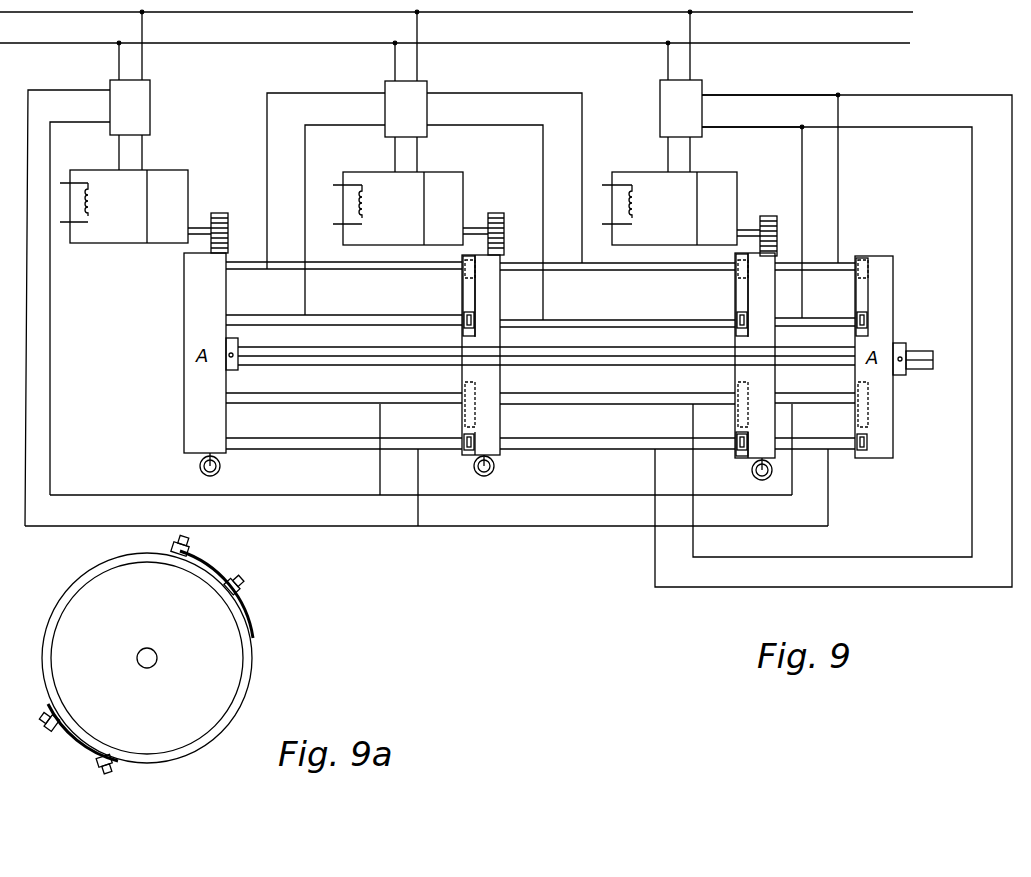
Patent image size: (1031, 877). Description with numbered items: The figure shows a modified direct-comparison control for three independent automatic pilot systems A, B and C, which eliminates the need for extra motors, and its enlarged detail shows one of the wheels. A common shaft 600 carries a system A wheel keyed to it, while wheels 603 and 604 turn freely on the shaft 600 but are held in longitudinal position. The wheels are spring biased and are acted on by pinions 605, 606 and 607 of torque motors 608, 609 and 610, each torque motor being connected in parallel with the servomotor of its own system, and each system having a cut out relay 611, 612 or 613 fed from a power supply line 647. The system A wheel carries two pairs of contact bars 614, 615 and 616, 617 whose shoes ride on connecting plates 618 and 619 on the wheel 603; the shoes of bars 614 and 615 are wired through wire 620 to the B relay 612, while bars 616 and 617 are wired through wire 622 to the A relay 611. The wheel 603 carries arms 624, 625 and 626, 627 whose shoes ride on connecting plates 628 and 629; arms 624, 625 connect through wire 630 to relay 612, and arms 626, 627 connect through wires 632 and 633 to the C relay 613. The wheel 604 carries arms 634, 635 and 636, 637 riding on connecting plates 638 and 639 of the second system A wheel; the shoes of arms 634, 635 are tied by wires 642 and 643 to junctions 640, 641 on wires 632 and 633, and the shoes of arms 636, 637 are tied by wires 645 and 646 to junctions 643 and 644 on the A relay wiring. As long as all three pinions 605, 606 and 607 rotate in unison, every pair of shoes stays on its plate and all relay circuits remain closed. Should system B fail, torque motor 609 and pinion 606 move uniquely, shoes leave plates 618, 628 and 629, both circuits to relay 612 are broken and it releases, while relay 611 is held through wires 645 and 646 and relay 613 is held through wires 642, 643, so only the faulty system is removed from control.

In FIG. 9, the shaft 600 is at (280, 368).
In FIG. 9A, the shaft 600 is at (157, 662).
In FIG. 9, the wheel 603 is at (503, 383).
In FIG. 9A, the wheel 603 is at (252, 676).
In FIG. 9, the wheel 604 is at (777, 376).
In FIG. 9, the pinion 605 is at (219, 213).
In FIG. 9, the pinion 606 is at (496, 213).
In FIG. 9, the pinion 607 is at (765, 216).
In FIG. 9, the torque motor 608 is at (124, 206).
In FIG. 9, the torque motor 609 is at (398, 208).
In FIG. 9, the torque motor 610 is at (669, 208).
In FIG. 9, the cut out relay 611 is at (150, 108).
In FIG. 9, the cut out relay 612 is at (427, 110).
In FIG. 9, the cut out relay 613 is at (660, 111).
In FIG. 9, the contact bar 614 is at (246, 278).
In FIG. 9A, the contact bar 614 is at (172, 545).
In FIG. 9, the contact bar 615 is at (254, 315).
In FIG. 9A, the contact bar 615 is at (230, 586).
In FIG. 9A, the contact bar 616 is at (50, 728).
In FIG. 9A, the contact bar 617 is at (98, 762).
In FIG. 9, the connecting plate 618 is at (462, 302).
In FIG. 9A, the connecting plate 618 is at (245, 604).
In FIG. 9A, the connecting plate 619 is at (140, 766).
In FIG. 9, the wire 620 is at (283, 93).
In FIG. 9, the wire 622 is at (40, 90).
In FIG. 9, the arm 624 is at (566, 278).
In FIG. 9, the arm 625 is at (582, 320).
In FIG. 9, the arm 626 is at (582, 393).
In FIG. 9, the arm 627 is at (578, 438).
In FIG. 9, the connecting plate 628 is at (735, 302).
In FIG. 9, the connecting plate 629 is at (735, 440).
In FIG. 9, the wire 630 is at (515, 93).
In FIG. 9, the wire 632 is at (740, 95).
In FIG. 9, the wire 633 is at (712, 127).
In FIG. 9, the arm 634 is at (812, 277).
In FIG. 9, the arm 635 is at (800, 326).
In FIG. 9, the arm 636 is at (800, 408).
In FIG. 9, the arm 637 is at (808, 458).
In FIG. 9, the connecting plate 638 is at (855, 312).
In FIG. 9, the connecting plate 639 is at (838, 458).
In FIG. 9, the junction 640 is at (840, 95).
In FIG. 9, the junction 641 is at (782, 127).
In FIG. 9, the wire 642 is at (840, 170).
In FIG. 9, the wire / junction 643 is at (380, 497).
In FIG. 9, the junction 644 is at (418, 528).
In FIG. 9, the wire 645 is at (560, 495).
In FIG. 9, the wire 646 is at (563, 526).
In FIG. 9, the line 647 is at (590, 12).